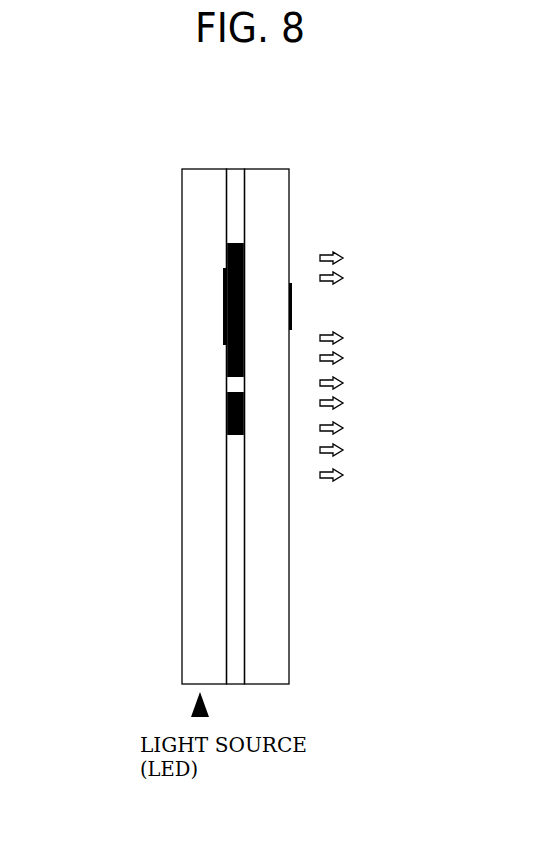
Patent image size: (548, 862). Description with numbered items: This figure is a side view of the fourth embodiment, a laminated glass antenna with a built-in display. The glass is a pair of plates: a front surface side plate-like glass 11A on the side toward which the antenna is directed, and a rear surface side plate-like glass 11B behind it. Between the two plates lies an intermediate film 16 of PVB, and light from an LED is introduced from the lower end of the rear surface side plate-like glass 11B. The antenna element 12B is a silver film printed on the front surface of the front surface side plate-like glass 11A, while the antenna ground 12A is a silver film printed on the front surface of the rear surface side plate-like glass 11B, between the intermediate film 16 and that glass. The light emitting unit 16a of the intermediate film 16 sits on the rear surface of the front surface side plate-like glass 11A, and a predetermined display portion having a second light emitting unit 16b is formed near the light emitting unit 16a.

The front surface side plate-like glass 11A is at (263, 169).
The rear surface side plate-like glass 11B is at (203, 169).
The antenna ground 12A is at (223, 313).
The antenna element 12B is at (291, 308).
The intermediate film 16 is at (227, 575).
The light emitting unit 16a is at (226, 360).
The second light emitting unit 16b is at (226, 415).